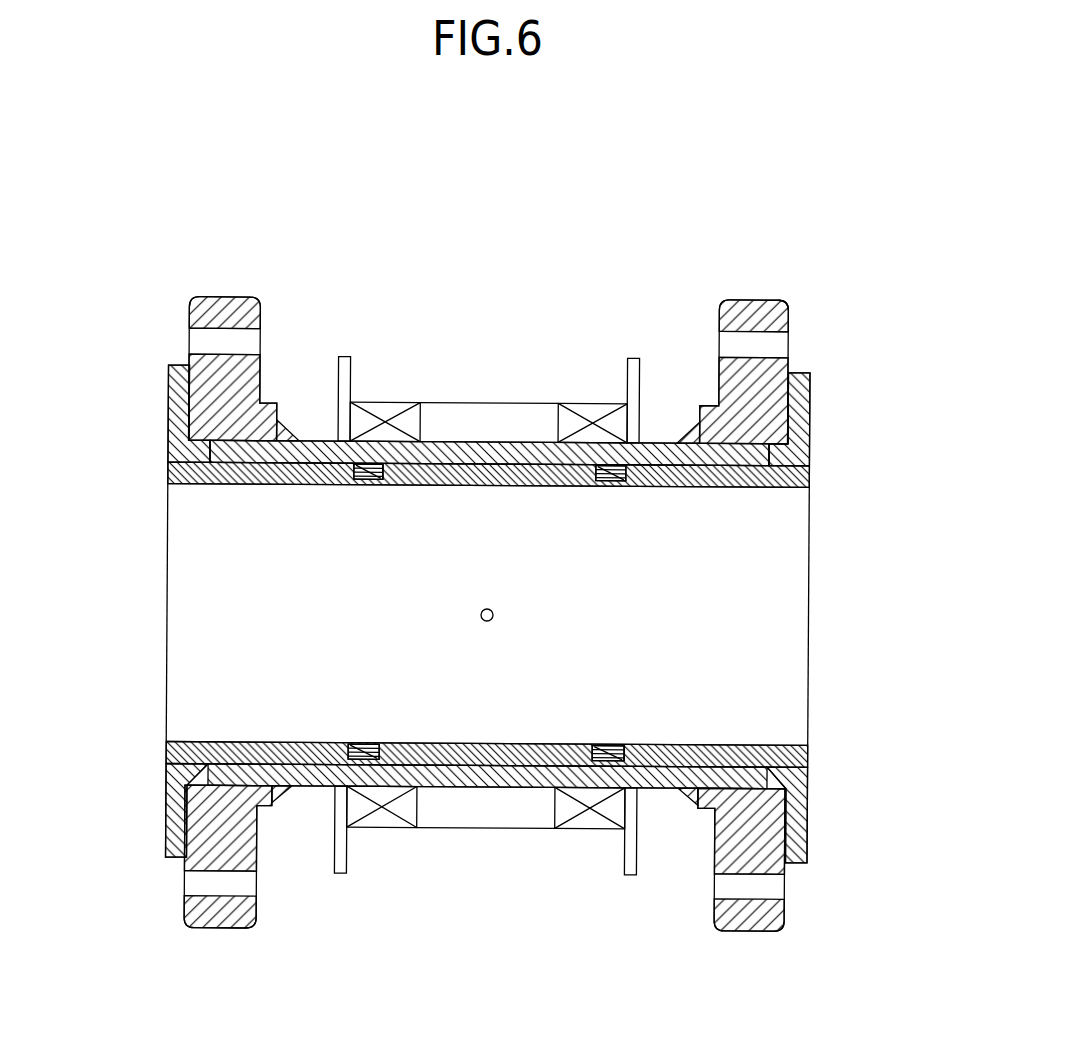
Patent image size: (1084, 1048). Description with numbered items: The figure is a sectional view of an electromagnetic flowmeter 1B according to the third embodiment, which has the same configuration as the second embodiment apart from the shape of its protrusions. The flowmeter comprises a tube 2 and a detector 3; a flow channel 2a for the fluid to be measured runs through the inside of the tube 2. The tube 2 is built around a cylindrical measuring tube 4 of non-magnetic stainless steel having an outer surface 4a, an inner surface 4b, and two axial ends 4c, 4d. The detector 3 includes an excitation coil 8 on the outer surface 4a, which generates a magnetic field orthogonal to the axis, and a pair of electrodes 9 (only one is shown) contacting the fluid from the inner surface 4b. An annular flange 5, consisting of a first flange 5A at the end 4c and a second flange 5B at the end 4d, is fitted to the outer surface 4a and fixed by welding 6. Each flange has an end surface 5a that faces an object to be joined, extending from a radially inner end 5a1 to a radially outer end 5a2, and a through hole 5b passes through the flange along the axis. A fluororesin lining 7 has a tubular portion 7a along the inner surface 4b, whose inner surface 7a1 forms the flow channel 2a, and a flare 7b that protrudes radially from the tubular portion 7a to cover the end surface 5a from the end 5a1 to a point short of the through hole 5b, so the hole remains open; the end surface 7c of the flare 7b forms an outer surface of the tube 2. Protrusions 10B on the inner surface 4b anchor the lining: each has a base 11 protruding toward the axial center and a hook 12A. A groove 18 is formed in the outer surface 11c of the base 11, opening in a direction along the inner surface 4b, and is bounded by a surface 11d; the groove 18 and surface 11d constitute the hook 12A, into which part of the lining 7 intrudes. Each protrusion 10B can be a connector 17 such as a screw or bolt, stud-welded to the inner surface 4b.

The electromagnetic flowmeter 1B is at (792, 200).
The tube 2 is at (768, 294).
The flow channel 2a is at (808, 672).
The detector 3 is at (356, 606).
The measuring tube 4 is at (313, 798).
The outer surface 4a is at (303, 438).
The inner surface 4b is at (237, 468).
The end 4c is at (770, 490).
The end 4d is at (211, 465).
The flange 5 is at (496, 579).
The first flange 5A is at (714, 297).
The second flange 5B is at (186, 293).
The end surface 5a is at (192, 318).
The end 5a1 is at (770, 450).
The end 5a2 is at (792, 305).
The through hole 5b is at (217, 337).
The welding 6 is at (290, 438).
The lining 7 is at (541, 674).
The tubular portion 7a is at (647, 488).
The inner surface 7a1 is at (765, 745).
The flare 7b is at (490, 426).
The end surface 7c is at (167, 386).
The excitation coil 8 is at (598, 404).
The electrode 9 is at (481, 615).
The protrusion 10B is at (357, 494).
The base 11 is at (370, 484).
The outer surface 11c is at (607, 489).
The surface 11d is at (572, 612).
The hook 12A is at (387, 476).
The connector 17 is at (464, 612).
The groove 18 is at (572, 612).